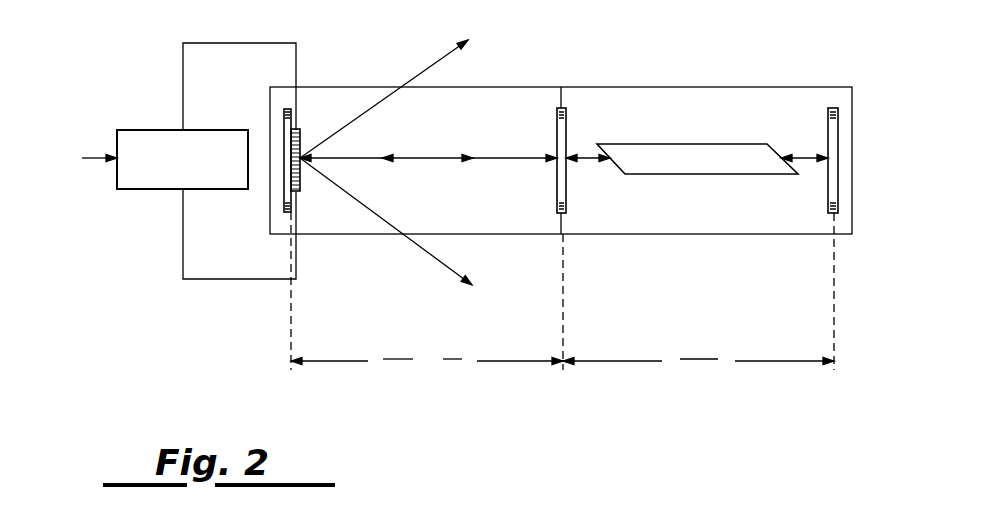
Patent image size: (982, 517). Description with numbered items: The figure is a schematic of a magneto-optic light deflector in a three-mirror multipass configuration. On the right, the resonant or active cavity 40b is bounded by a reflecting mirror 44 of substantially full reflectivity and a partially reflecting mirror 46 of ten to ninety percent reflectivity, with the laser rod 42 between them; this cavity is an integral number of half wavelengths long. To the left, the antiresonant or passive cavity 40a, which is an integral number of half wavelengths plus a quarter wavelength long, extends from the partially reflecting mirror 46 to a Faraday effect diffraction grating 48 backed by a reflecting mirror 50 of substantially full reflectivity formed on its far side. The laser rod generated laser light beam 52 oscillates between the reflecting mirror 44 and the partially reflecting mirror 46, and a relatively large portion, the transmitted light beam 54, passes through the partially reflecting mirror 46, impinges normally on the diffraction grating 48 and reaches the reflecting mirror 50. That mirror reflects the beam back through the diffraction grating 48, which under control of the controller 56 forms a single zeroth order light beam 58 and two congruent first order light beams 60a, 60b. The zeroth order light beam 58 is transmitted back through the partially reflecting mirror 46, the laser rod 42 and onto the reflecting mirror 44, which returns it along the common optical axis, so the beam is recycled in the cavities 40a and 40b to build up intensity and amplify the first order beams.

The passive cavity 40a is at (495, 87).
The active cavity 40b is at (682, 87).
The laser rod 42 is at (667, 144).
The reflecting mirror 44 is at (827, 118).
The partially reflecting mirror 46 is at (568, 118).
The Faraday effect diffraction grating 48 is at (303, 133).
The reflecting mirror 50 is at (288, 118).
The laser light beam 52 is at (587, 165).
The transmitted light beam 54 is at (382, 155).
The controller 56 is at (145, 130).
The 0'th order light beam 58 is at (470, 162).
The 1'st order light beam 60a is at (440, 60).
The 1'st order light beam 60b is at (428, 252).